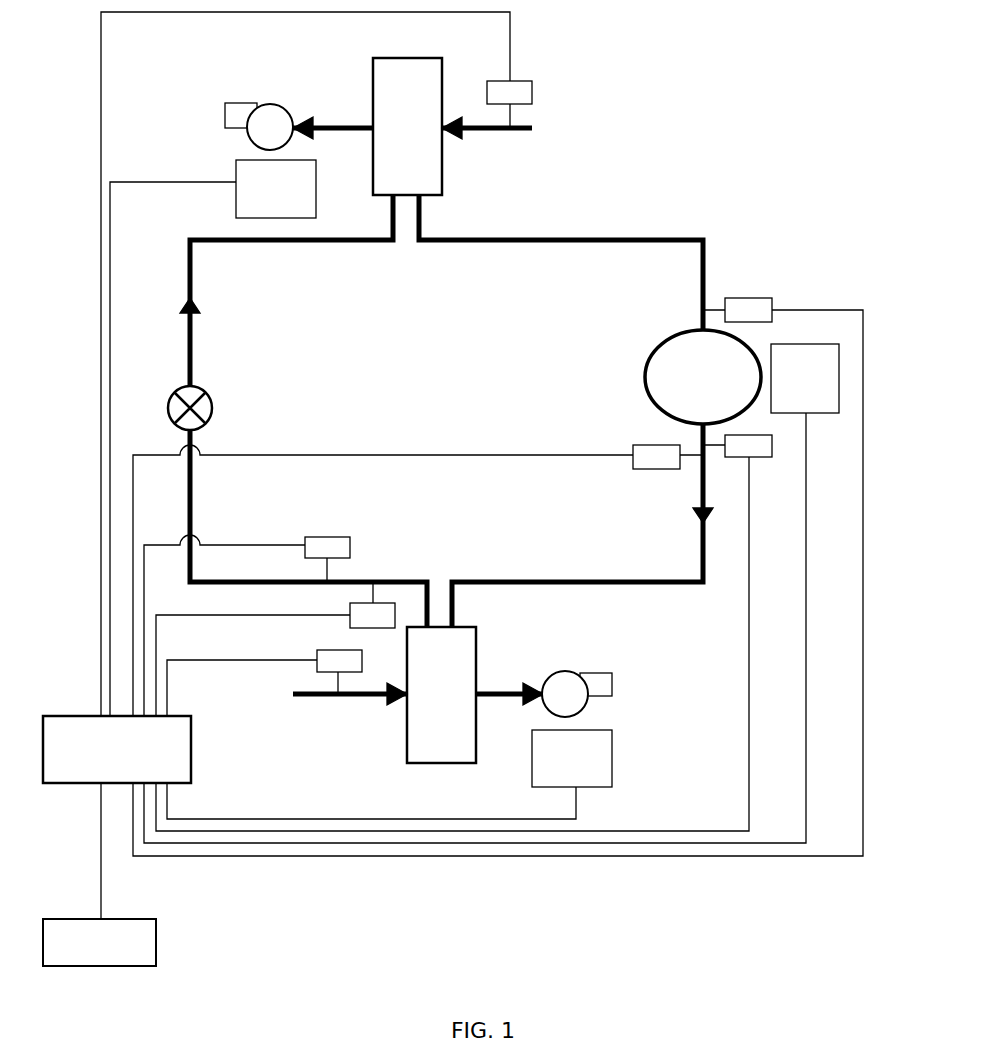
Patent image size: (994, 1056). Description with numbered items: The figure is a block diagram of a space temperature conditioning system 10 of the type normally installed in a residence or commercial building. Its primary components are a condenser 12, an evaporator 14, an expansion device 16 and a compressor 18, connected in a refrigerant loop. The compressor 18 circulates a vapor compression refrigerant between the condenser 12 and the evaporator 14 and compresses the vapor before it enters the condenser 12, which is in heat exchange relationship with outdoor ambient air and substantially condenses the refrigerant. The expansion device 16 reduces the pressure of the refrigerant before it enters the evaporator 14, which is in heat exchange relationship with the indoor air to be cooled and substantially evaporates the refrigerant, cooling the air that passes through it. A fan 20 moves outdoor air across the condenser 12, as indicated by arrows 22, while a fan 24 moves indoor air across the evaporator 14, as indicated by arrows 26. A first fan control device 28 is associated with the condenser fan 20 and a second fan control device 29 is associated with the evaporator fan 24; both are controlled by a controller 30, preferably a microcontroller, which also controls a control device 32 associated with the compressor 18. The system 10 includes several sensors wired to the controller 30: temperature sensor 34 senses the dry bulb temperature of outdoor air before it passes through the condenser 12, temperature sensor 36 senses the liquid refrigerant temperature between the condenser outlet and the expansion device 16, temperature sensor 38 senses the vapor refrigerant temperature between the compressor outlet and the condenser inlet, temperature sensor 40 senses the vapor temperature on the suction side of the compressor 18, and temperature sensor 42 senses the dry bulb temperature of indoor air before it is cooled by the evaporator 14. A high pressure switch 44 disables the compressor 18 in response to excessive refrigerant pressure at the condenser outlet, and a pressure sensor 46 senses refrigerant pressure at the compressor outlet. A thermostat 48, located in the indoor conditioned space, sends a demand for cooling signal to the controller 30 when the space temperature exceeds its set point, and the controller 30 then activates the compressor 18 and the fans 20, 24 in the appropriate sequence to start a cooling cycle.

The space temperature conditioning system 10 is at (643, 164).
The condenser 12 is at (476, 635).
The evaporator 14 is at (442, 170).
The expansion device 16 is at (213, 405).
The compressor 18 is at (645, 375).
The fan 20 is at (580, 673).
The arrows 22 is at (390, 706).
The fan 24 is at (257, 103).
The arrows 26 is at (312, 118).
The first fan control device 28 is at (612, 760).
The second fan control device 29 is at (236, 160).
The controller 30 is at (191, 745).
The control device 32 is at (839, 372).
The temperature sensor 34 is at (317, 650).
The temperature sensor 36 is at (388, 603).
The temperature sensor 38 is at (765, 457).
The temperature sensor 40 is at (772, 298).
The temperature sensor 42 is at (532, 88).
The pressure switch 44 is at (305, 537).
The pressure sensor 46 is at (650, 469).
The thermostat 48 is at (156, 940).